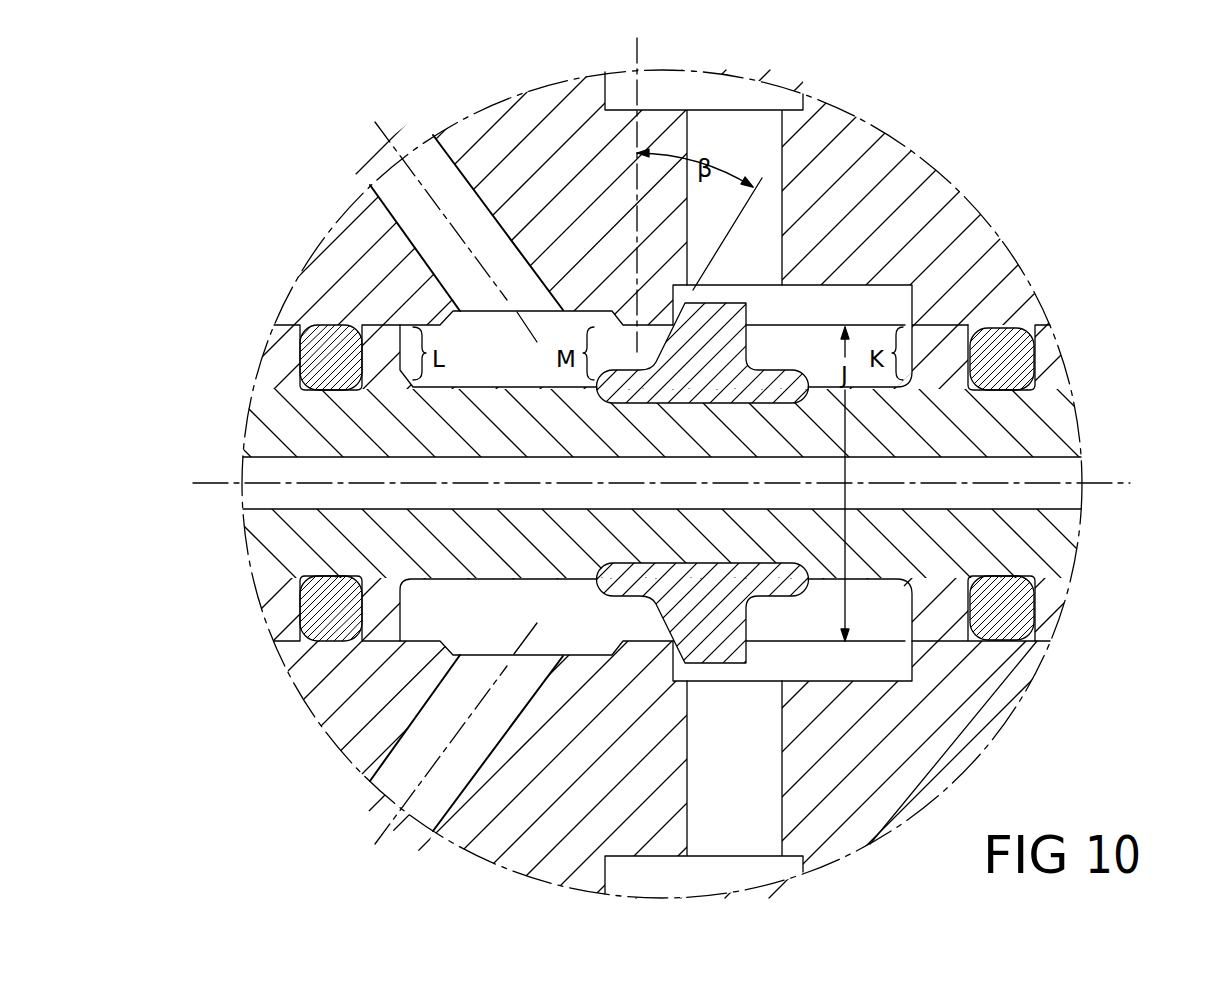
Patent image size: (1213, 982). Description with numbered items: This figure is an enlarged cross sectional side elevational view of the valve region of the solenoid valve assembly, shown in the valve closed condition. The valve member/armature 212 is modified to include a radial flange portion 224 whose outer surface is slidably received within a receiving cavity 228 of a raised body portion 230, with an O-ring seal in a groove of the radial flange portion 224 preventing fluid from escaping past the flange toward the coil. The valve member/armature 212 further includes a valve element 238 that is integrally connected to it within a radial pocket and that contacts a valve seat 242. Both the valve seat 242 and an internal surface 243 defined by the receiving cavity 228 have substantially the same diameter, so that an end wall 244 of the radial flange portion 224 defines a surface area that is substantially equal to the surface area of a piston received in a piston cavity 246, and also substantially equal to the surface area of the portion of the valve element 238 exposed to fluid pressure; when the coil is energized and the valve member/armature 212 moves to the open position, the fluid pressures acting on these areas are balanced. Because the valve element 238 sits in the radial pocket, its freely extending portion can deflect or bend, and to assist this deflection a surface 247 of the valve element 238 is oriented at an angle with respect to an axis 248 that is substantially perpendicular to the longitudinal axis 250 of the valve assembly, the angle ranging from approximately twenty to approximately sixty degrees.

The valve member/armature 212 is at (500, 557).
The radial flange portion 224 is at (1078, 405).
The receiving cavity 228 is at (1054, 644).
The raised body portion 230 is at (985, 683).
The valve element 238 is at (748, 312).
The valve seat 242 is at (667, 648).
The internal surface 243 is at (1043, 636).
The end wall 244 is at (913, 360).
The piston cavity 246 is at (372, 648).
The surface 247 is at (653, 612).
The axis 248 is at (642, 54).
The longitudinal axis 250 is at (208, 478).